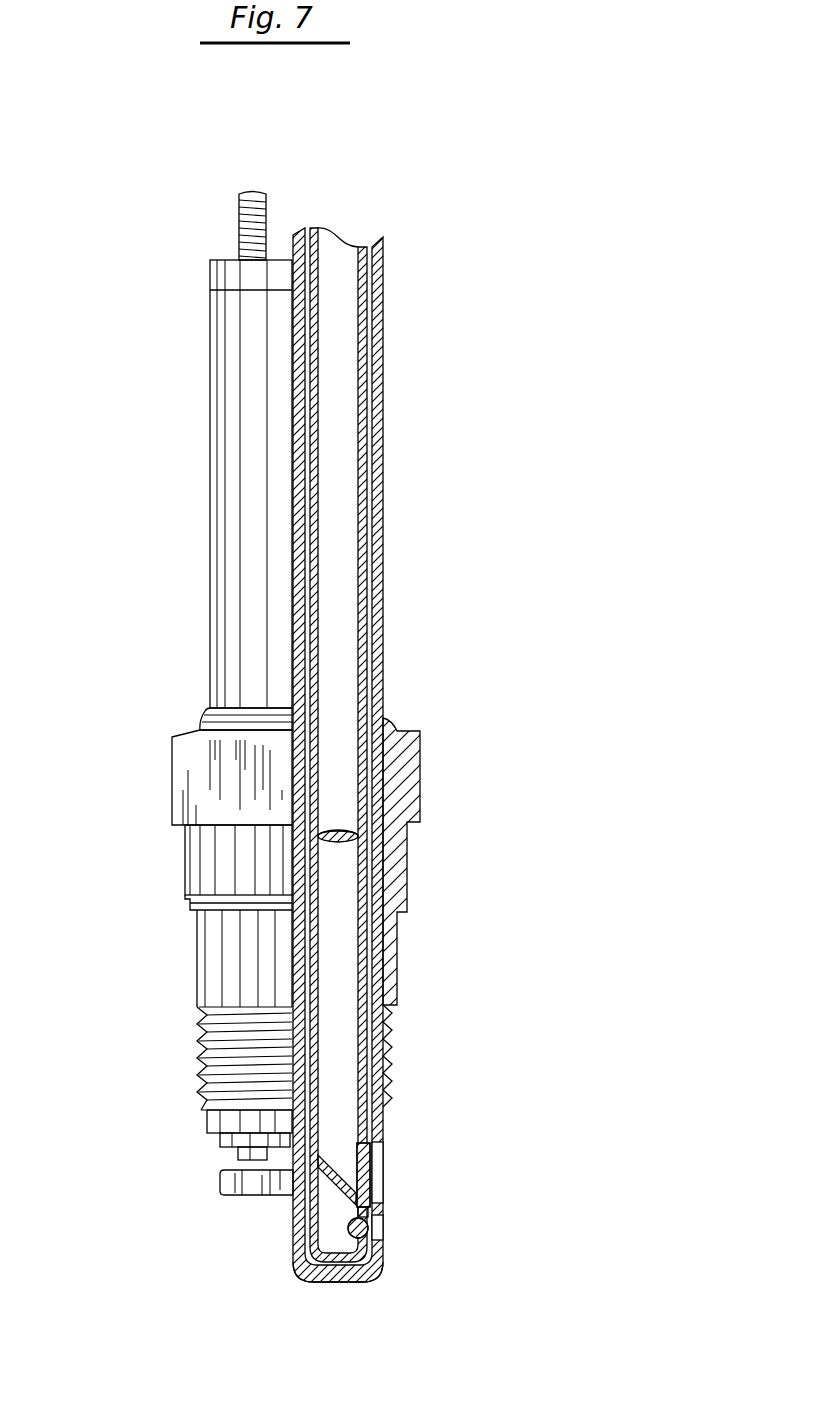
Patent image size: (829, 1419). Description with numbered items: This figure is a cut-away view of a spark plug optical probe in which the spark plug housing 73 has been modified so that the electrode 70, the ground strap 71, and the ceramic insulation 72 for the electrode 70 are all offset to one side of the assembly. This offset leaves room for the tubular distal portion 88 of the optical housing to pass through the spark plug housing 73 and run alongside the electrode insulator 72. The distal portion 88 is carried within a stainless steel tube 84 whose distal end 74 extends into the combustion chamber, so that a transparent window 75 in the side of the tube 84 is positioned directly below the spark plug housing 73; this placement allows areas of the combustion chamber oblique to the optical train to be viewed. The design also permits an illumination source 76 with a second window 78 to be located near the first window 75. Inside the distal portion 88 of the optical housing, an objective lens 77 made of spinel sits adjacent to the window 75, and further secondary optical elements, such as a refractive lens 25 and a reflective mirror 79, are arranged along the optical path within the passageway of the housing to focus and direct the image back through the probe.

The refractive lens 25 is at (337, 843).
The electrode 70 is at (242, 1153).
The ground strap 71 is at (257, 1197).
The ceramic insulation 72 is at (240, 558).
The spark plug housing 73 is at (202, 795).
The distal end 74 is at (308, 1273).
The transparent window 75 is at (378, 1158).
The illumination source 76 is at (357, 1240).
The objective lens 77 is at (367, 1175).
The second window 78 is at (380, 1226).
The reflective mirror 79 is at (330, 1168).
The stainless steel tube 84 is at (377, 467).
The distal portion of optical housing 88 is at (360, 378).